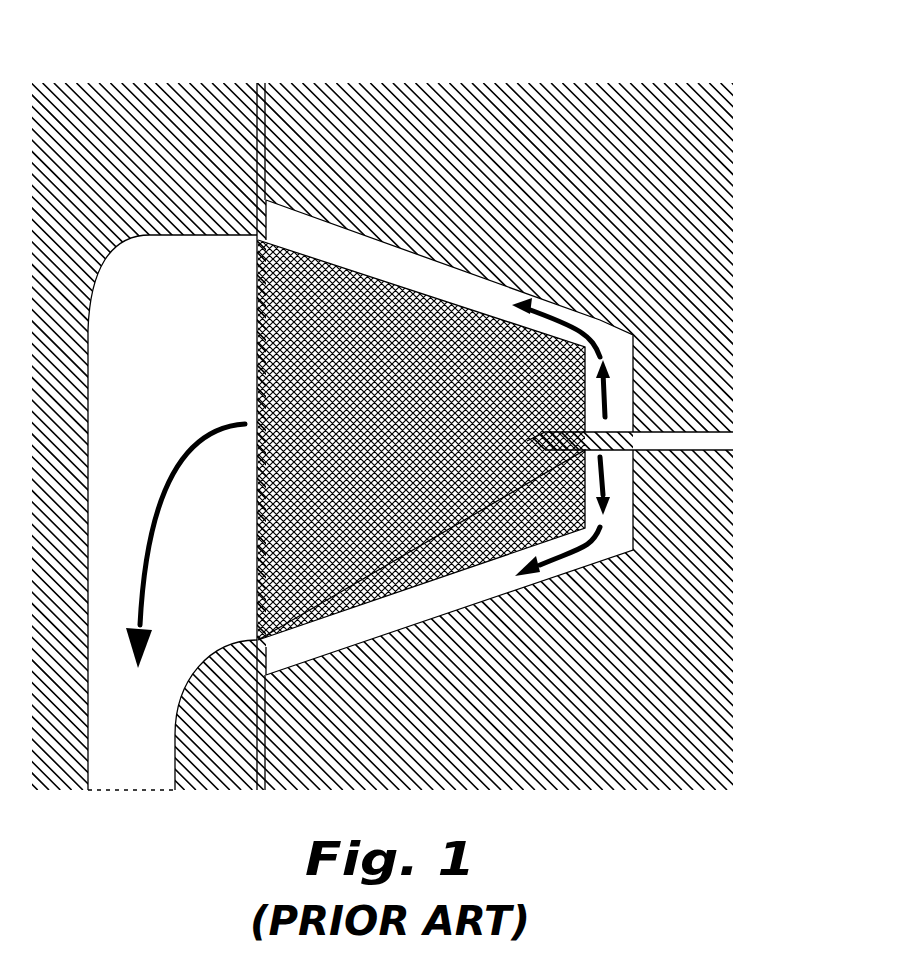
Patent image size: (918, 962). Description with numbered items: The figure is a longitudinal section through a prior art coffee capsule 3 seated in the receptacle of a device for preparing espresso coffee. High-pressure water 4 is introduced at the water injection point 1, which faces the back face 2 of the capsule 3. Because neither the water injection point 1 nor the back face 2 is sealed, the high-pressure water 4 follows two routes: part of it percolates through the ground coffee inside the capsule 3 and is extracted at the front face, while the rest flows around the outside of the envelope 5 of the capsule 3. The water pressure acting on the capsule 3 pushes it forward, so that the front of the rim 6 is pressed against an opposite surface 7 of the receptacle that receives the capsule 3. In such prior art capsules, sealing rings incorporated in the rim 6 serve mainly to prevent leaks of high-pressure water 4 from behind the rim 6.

The water injection point 1 is at (605, 424).
The back face 2 is at (597, 362).
The capsule 3 is at (418, 287).
The high-pressure water 4 is at (575, 325).
The envelope 5 is at (370, 262).
The rim 6 is at (268, 205).
The opposite surface 7 is at (258, 123).